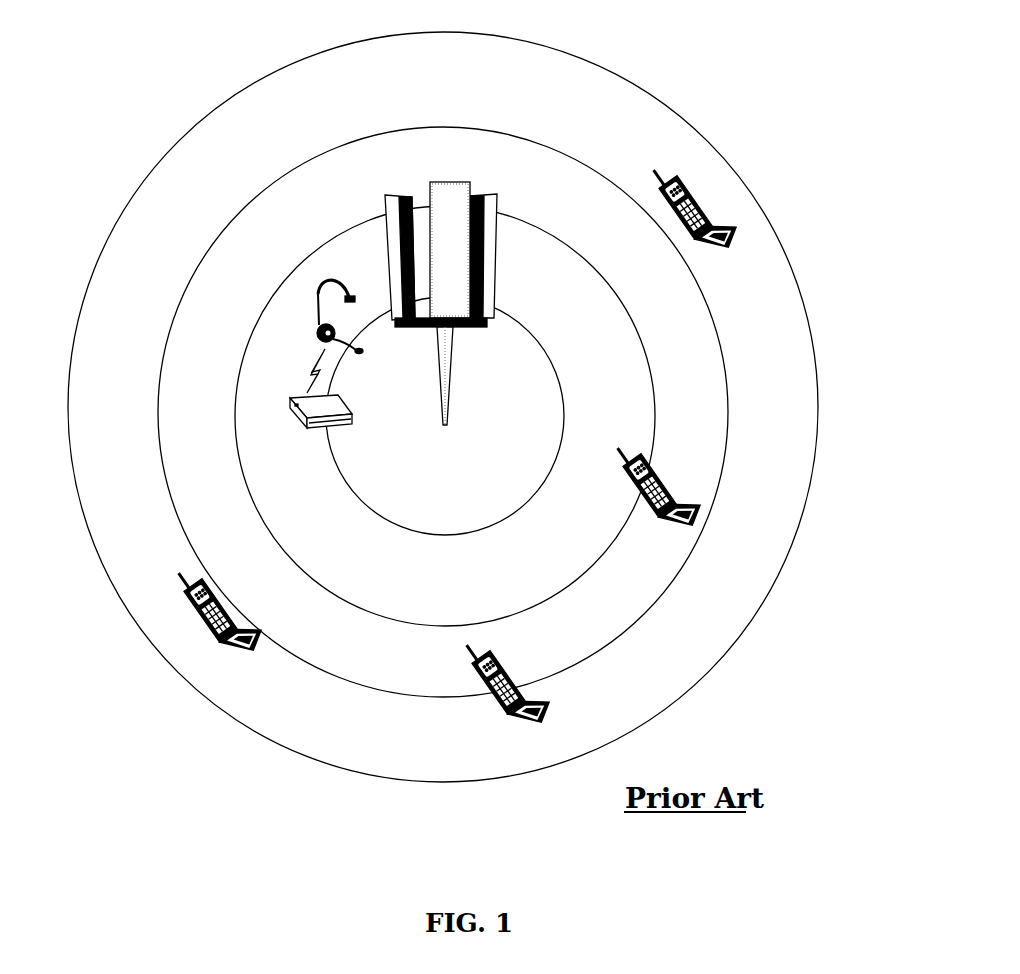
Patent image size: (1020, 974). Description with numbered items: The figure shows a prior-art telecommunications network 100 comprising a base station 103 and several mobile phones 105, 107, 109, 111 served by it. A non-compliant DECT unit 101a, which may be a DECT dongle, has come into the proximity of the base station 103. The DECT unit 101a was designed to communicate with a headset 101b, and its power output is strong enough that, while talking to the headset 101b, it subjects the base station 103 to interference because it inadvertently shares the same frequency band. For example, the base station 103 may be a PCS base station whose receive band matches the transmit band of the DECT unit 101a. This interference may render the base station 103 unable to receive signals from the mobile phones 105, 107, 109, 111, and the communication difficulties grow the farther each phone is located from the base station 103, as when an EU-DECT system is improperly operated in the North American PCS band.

The telecommunications network 100 is at (713, 68).
The DECT unit 101a is at (313, 455).
The headset 101b is at (313, 327).
The base station 103 is at (502, 407).
The mobile phone 105 is at (749, 275).
The mobile phone 107 is at (665, 561).
The mobile phone 109 is at (568, 721).
The mobile phone 111 is at (276, 683).